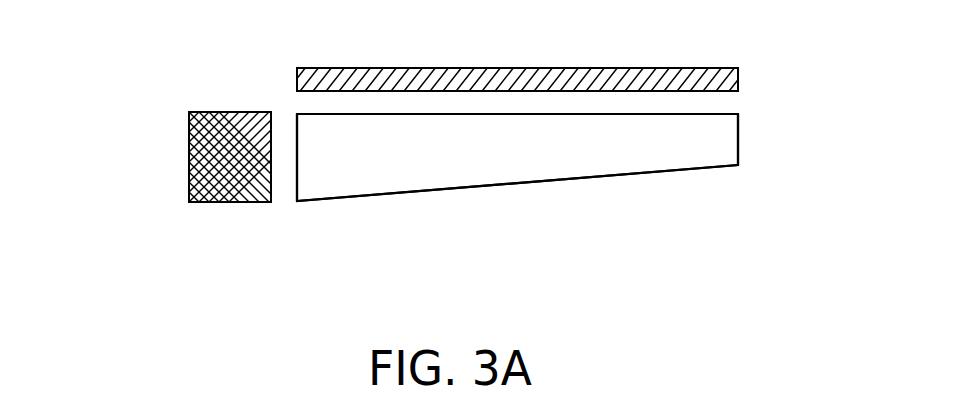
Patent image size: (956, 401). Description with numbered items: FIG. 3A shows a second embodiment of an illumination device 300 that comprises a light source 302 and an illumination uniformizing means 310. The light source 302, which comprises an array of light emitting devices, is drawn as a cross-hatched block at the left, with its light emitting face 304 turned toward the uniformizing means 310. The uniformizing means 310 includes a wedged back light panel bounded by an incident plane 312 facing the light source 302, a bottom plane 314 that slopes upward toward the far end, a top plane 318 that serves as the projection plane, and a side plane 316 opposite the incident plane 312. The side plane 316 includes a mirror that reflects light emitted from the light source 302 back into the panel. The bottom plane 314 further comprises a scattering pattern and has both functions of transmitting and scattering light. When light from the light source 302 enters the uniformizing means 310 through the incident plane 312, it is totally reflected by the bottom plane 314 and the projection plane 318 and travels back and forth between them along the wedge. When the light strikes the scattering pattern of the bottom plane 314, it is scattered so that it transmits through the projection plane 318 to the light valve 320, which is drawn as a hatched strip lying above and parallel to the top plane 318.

The light guide assembly 300 is at (562, 20).
The light source 302 is at (188, 160).
The light emitting surface 304 is at (281, 167).
The illumination uniformizing means 310 is at (558, 158).
The incident plane 312 is at (296, 112).
The bottom plane 314 is at (428, 174).
The side plane 316 is at (727, 134).
The top plane 318 is at (342, 111).
The light valve 320 is at (740, 80).